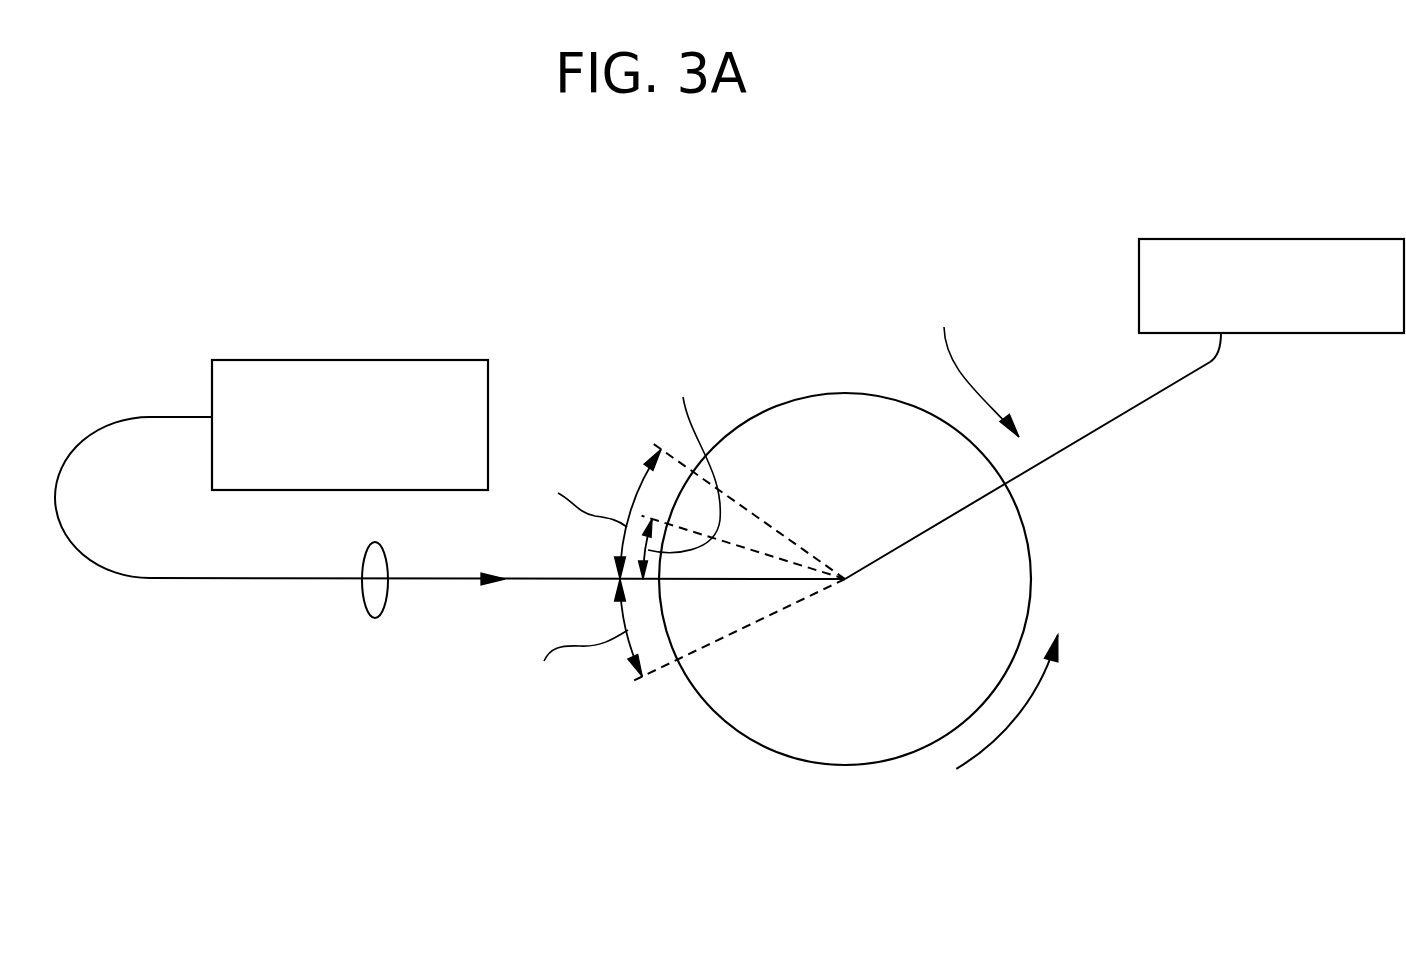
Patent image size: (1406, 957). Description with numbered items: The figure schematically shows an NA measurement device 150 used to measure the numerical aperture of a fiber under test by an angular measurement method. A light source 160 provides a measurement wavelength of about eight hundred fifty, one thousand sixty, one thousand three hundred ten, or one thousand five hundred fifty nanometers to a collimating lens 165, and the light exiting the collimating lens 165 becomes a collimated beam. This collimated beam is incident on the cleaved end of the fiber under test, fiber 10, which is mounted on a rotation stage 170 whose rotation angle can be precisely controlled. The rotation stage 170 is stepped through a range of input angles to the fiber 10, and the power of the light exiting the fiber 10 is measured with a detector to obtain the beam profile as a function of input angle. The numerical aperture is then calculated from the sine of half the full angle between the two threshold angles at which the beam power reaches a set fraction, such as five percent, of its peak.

The NA measurement device 150 is at (828, 210).
The light source 160 is at (450, 360).
The collimating lens 165 is at (385, 547).
The rotation stage 170 is at (730, 728).
The fiber 10 is at (1027, 475).